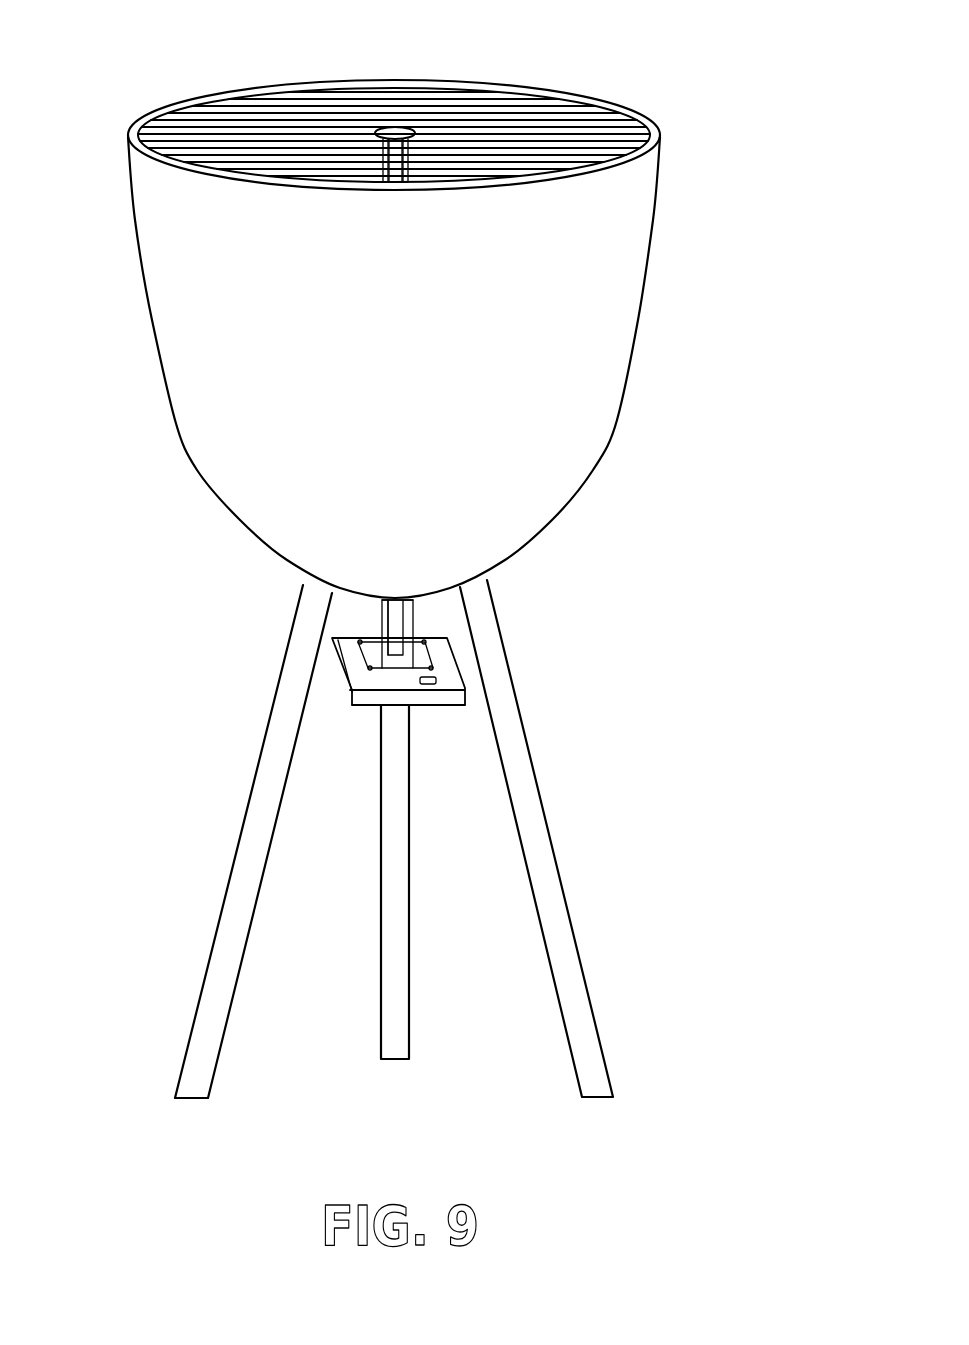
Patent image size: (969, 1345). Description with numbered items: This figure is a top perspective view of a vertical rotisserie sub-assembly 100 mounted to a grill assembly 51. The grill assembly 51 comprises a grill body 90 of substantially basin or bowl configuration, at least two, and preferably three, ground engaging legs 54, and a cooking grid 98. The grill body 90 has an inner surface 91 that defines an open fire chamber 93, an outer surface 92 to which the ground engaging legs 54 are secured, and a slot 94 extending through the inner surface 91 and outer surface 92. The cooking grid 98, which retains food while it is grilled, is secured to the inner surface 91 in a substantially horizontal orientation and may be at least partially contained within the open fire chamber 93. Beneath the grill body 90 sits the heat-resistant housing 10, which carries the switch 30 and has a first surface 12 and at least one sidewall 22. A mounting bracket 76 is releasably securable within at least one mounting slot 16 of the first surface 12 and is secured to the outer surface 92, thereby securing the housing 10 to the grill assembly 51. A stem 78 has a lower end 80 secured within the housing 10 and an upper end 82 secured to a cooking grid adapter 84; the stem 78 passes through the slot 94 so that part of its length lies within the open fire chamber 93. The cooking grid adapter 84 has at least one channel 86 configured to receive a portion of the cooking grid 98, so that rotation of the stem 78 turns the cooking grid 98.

The housing 10 is at (337, 660).
The first surface 12 is at (335, 641).
The mounting slot 16 is at (433, 645).
The sidewall 22 is at (345, 695).
The switch 30 is at (437, 688).
The grill assembly 51 is at (720, 543).
The ground engaging legs 54 is at (232, 923).
The mounting bracket 76 is at (413, 603).
The stem 78 is at (383, 172).
The lower end 80 is at (388, 618).
The upper end 82 is at (385, 148).
The cooking grid adapter 84 is at (416, 140).
The channel 86 is at (400, 128).
The grill body 90 is at (637, 330).
The inner surface 91 is at (637, 118).
The outer surface 92 is at (598, 383).
The open fire chamber 93 is at (163, 147).
The slot 94 is at (397, 597).
The cooking grid 98 is at (208, 102).
The vertical rotisserie sub-assembly 100 is at (558, 672).